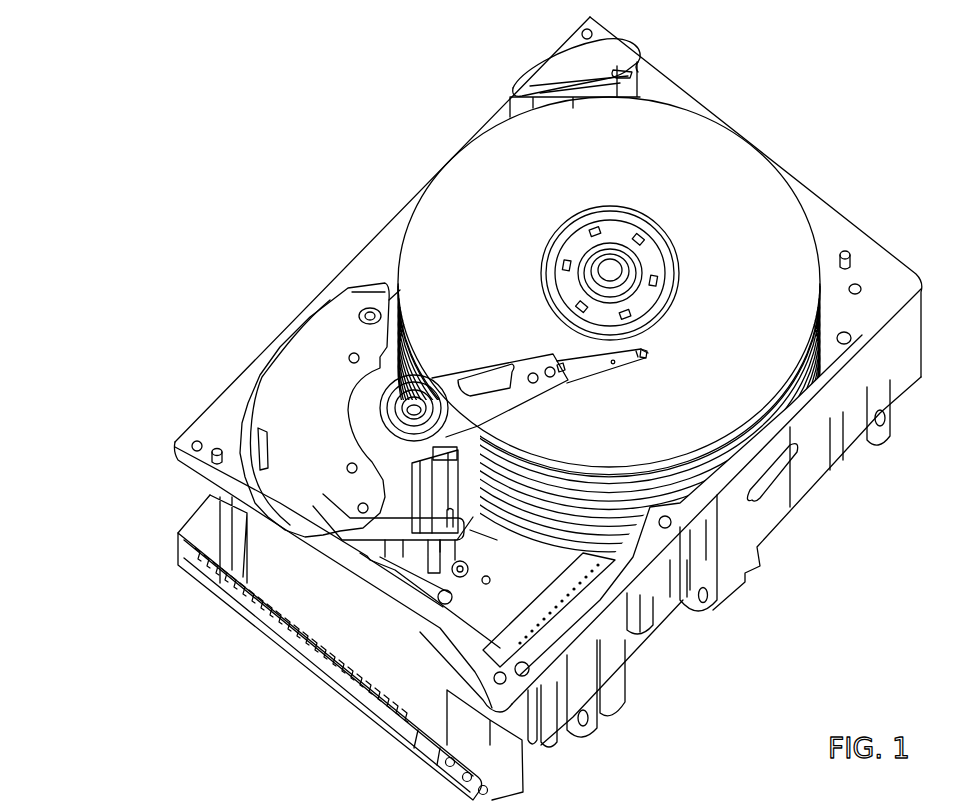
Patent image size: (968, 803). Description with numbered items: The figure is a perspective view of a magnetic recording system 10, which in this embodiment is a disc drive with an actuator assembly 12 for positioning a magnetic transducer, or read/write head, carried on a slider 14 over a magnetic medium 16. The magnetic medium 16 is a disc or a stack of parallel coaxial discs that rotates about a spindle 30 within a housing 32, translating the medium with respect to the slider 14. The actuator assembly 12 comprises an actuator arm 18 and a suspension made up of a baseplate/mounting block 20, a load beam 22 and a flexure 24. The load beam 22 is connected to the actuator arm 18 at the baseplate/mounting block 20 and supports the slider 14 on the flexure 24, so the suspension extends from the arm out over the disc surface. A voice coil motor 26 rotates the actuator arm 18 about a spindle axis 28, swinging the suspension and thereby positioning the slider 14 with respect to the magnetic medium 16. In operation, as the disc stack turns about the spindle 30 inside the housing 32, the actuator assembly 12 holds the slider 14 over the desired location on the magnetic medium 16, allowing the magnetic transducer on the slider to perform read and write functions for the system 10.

The magnetic recording system 10 is at (870, 153).
The actuator assembly 12 is at (514, 340).
The slider 14 is at (644, 352).
The magnetic medium 16 is at (716, 150).
The actuator arm 18 is at (486, 378).
The baseplate/mounting block 20 is at (543, 390).
The load beam 22 is at (607, 367).
The flexure 24 is at (642, 360).
The voice coil motor 26 is at (276, 384).
The spindle axis 28 is at (416, 405).
The spindle 30 is at (614, 271).
The housing 32 is at (400, 207).